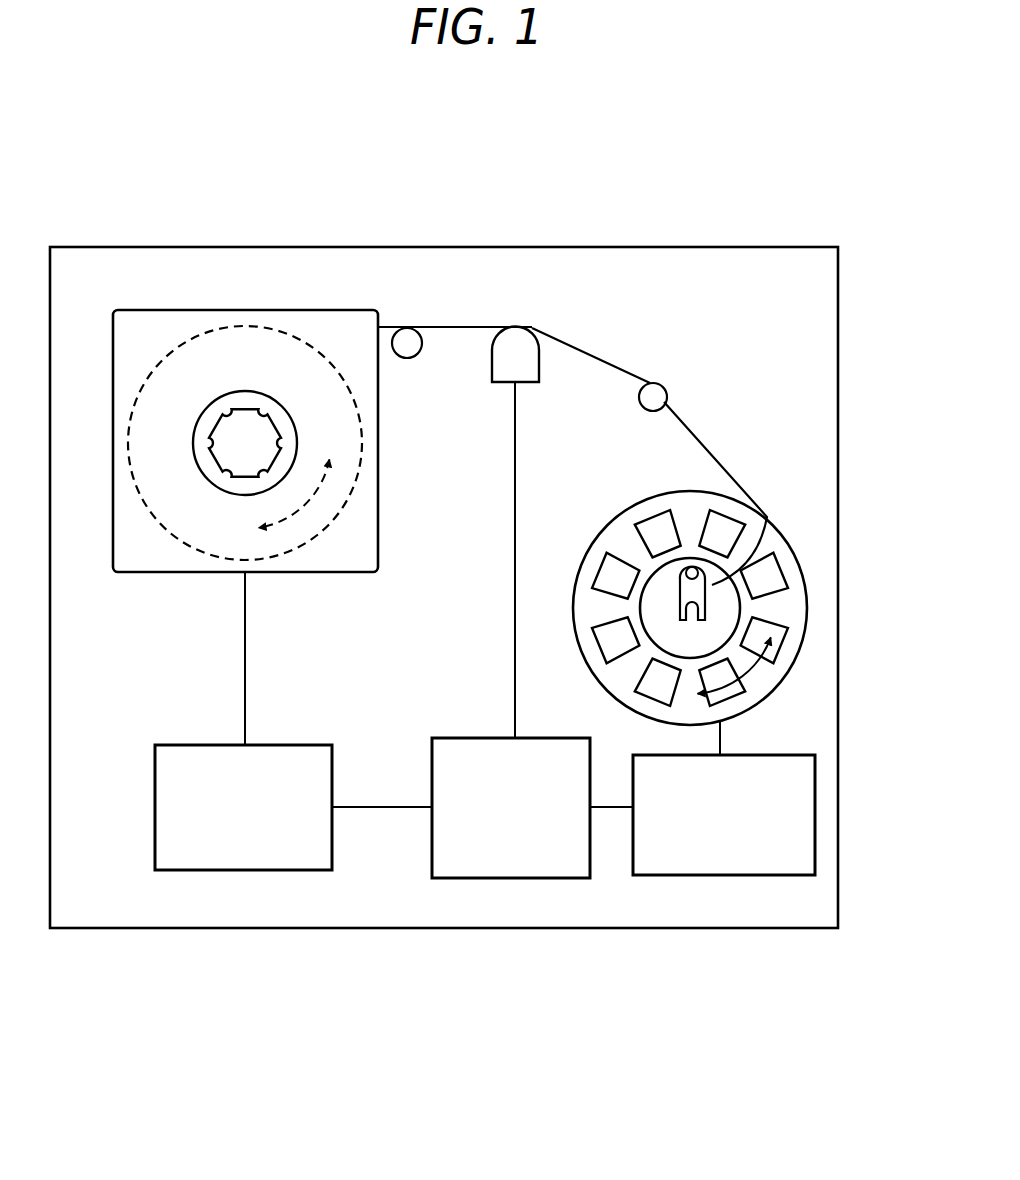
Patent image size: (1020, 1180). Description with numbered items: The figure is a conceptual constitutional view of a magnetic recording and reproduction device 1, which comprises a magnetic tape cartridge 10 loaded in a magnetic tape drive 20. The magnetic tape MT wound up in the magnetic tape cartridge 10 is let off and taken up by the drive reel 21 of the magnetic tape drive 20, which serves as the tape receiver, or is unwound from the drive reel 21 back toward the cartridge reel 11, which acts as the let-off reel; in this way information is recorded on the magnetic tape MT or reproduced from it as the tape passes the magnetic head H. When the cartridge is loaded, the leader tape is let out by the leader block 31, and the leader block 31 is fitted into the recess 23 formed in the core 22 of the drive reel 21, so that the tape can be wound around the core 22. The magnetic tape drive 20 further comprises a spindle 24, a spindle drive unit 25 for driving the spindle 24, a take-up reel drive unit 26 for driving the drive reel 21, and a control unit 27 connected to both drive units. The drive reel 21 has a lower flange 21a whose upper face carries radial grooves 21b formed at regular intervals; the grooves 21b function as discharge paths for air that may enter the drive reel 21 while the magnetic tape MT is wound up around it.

The magnetic recording and reproduction device 1 is at (636, 178).
The magnetic tape cartridge 10 is at (255, 310).
The cartridge reel 11 is at (253, 400).
The magnetic tape drive 20 is at (687, 247).
The drive reel 21 is at (773, 693).
The lower flange 21a is at (672, 495).
The radial grooves 21b is at (657, 537).
The core 22 is at (662, 623).
The recess 23 is at (767, 517).
The spindle 24 is at (243, 430).
The spindle drive unit 25 is at (240, 870).
The take-up reel drive unit 26 is at (722, 878).
The control unit 27 is at (490, 880).
The leader block 31 is at (708, 594).
The magnetic head H is at (520, 343).
The magnetic tape MT is at (707, 433).